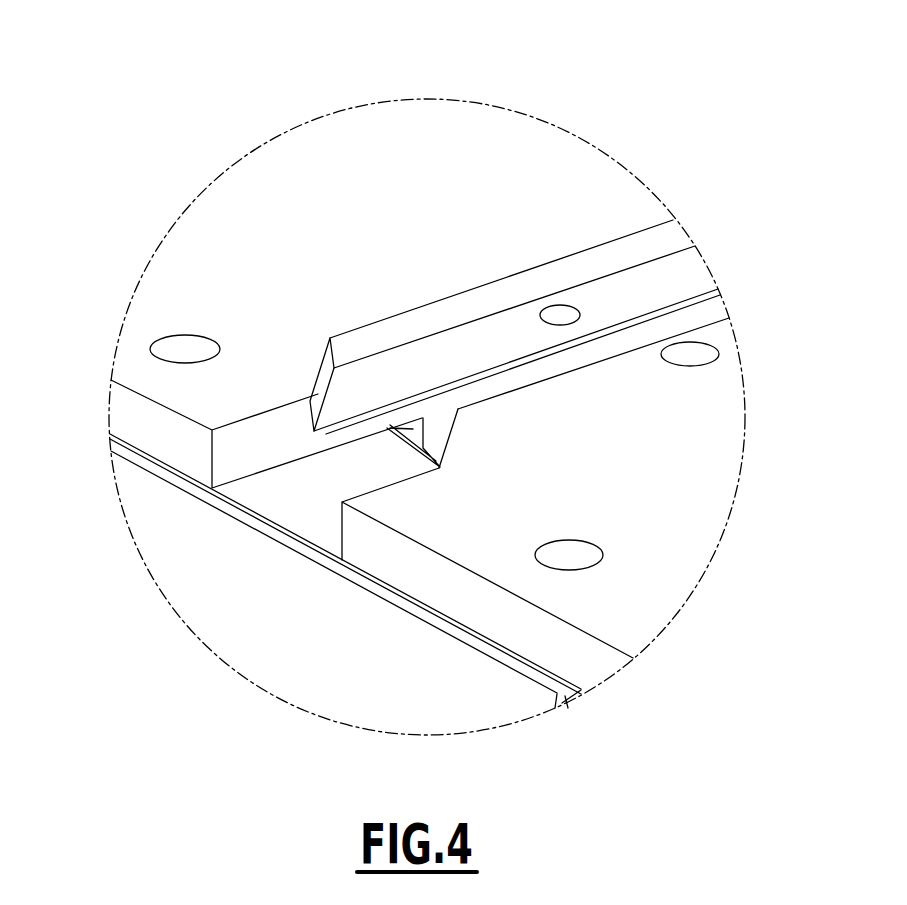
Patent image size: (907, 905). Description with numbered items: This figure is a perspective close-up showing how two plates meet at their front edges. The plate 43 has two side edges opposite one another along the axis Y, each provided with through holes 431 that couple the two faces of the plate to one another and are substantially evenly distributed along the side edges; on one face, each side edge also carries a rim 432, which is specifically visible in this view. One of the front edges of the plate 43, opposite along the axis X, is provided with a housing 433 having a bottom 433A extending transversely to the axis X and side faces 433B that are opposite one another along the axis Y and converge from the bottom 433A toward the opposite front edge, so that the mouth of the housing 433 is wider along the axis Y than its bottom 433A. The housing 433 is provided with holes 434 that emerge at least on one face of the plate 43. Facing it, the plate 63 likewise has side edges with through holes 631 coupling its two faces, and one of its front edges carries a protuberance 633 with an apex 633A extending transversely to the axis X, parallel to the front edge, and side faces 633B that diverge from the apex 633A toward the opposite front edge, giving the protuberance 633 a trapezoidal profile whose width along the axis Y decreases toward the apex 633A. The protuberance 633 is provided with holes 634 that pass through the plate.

The plate 43 is at (341, 178).
The through holes 431 is at (186, 346).
The rim 432 is at (395, 431).
The housing 433 is at (592, 263).
The bottom 433A is at (660, 238).
The side faces 433B is at (330, 387).
The holes 434 is at (554, 306).
The plate 63 is at (580, 450).
The through holes 631 is at (569, 557).
The protuberance 633 is at (548, 450).
The apex 633A is at (528, 379).
The side faces 633B is at (438, 439).
The holes 634 is at (715, 347).